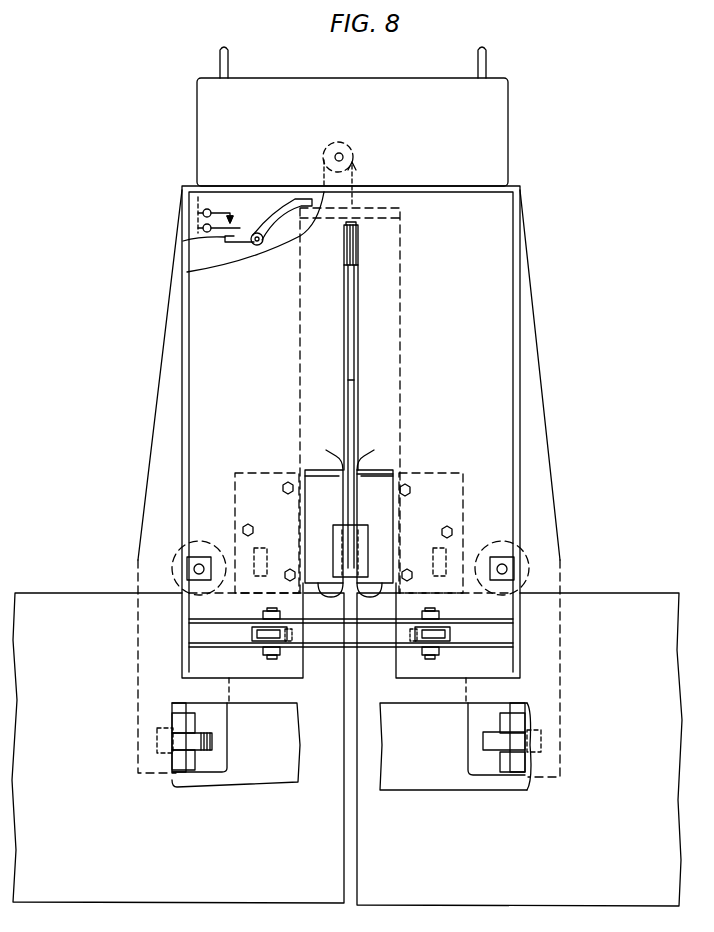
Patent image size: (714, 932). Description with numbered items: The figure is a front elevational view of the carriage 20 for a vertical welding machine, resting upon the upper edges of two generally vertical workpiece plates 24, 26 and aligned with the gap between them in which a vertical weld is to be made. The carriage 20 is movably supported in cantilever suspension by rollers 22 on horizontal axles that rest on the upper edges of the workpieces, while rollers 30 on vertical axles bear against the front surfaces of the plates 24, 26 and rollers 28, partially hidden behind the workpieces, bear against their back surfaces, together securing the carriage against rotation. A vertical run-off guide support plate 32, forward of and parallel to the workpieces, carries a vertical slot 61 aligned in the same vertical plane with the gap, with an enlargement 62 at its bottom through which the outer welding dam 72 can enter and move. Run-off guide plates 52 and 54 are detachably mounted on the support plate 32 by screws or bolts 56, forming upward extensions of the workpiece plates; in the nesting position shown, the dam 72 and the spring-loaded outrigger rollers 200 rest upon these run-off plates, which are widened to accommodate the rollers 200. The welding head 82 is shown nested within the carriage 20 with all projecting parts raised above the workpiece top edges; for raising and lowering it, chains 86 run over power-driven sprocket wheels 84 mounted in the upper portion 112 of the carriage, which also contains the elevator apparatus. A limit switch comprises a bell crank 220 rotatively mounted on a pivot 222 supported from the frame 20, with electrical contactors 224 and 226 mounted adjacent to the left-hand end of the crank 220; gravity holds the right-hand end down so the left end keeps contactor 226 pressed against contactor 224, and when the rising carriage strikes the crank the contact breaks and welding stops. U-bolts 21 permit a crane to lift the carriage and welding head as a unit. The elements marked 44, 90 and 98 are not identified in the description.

The carriage 20 is at (544, 271).
The U-bolts 21 is at (220, 58).
The rollers 22 is at (185, 571).
The workpiece plate 24 is at (87, 764).
The workpiece plate 26 is at (618, 764).
The rollers 28 is at (212, 742).
The rollers 30 is at (257, 636).
The run-off guide support plate 32 is at (456, 331).
The roller housing 44 is at (200, 556).
The run-off guide plate 52 is at (326, 482).
The run-off guide plate 54 is at (385, 512).
The screws or bolts 56 is at (282, 488).
The vertical slot 61 is at (358, 312).
The enlargement of the slot 62 is at (385, 468).
The outer welding dam 72 is at (364, 561).
The welding head 82 is at (400, 412).
The sprocket wheels 84 is at (353, 151).
The chains 86 is at (322, 171).
The rod section 90 is at (350, 396).
The cable end 98 is at (361, 206).
The upper portion of the carriage 112 is at (498, 117).
The outrigger rollers 200 is at (260, 578).
The bell crank 220 is at (279, 220).
The pivot 222 is at (255, 245).
The electrical contactor 224 is at (221, 211).
The electrical contactor 226 is at (183, 241).